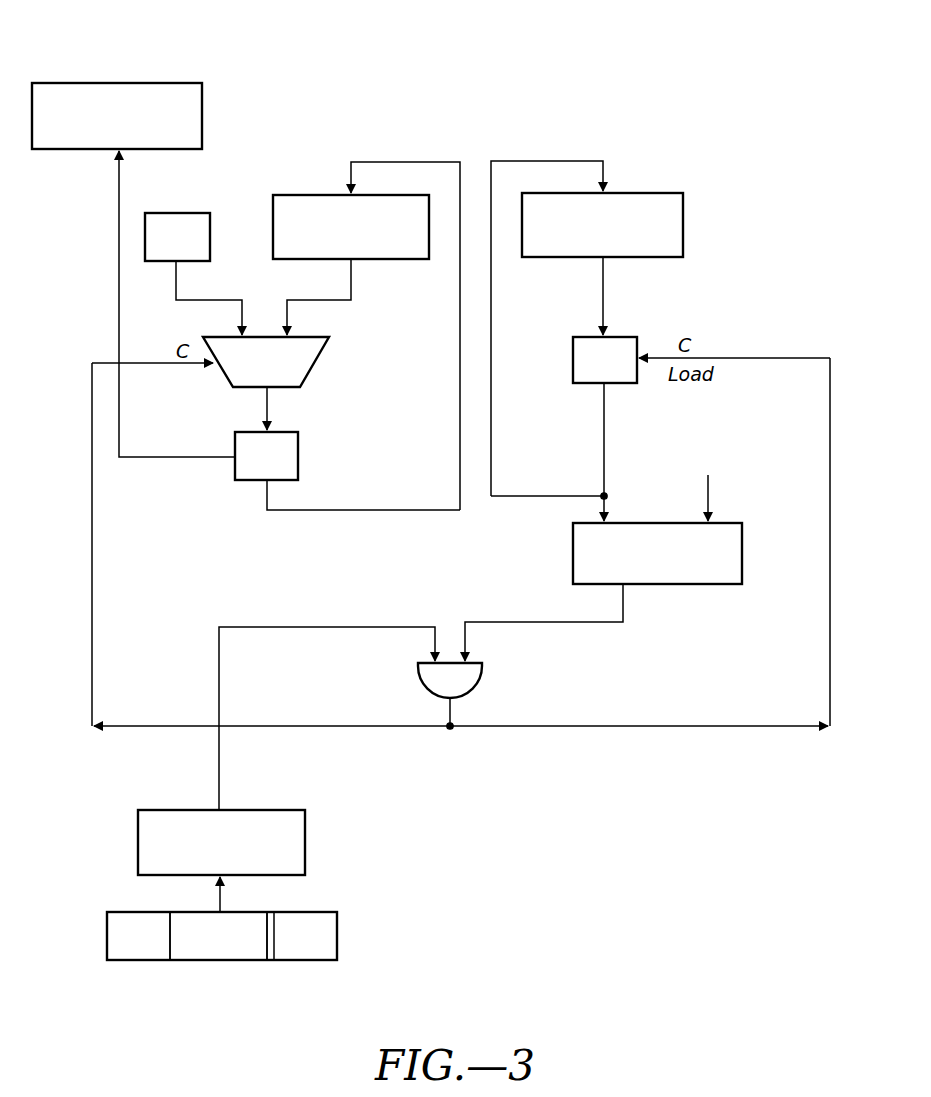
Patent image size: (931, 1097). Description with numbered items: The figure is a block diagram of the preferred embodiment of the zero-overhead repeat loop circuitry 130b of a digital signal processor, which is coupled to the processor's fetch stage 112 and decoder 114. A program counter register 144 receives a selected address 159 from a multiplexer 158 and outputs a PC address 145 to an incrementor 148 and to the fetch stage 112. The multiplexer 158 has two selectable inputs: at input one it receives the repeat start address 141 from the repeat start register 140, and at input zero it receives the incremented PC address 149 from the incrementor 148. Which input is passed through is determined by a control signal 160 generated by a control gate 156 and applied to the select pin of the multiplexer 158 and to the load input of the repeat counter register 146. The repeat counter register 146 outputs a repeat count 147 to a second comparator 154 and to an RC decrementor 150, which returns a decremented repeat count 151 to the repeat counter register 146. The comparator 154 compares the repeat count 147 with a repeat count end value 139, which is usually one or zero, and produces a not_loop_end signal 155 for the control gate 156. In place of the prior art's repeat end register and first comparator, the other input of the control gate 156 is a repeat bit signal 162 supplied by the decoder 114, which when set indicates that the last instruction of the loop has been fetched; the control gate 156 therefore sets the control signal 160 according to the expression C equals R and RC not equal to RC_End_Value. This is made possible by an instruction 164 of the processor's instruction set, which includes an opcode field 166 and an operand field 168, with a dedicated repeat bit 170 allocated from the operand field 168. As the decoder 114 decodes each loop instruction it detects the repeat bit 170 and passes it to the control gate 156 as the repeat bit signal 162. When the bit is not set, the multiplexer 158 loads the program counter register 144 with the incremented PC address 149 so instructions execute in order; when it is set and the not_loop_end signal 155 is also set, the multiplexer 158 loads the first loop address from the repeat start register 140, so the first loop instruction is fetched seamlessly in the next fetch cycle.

The fetch stage 112 is at (117, 116).
The decoder 114 is at (221, 842).
The repeat loop circuitry 130b is at (718, 70).
The repeat count end value 139 is at (710, 497).
The repeat start register 140 is at (165, 212).
The repeat start address 141 is at (178, 282).
The program counter register 144 is at (285, 432).
The PC address 145 is at (270, 503).
The repeat counter register 146 is at (622, 337).
The repeat count 147 is at (606, 410).
The incrementor 148 is at (320, 194).
The incremented PC address 149 is at (353, 282).
The RC decrementor 150 is at (645, 192).
The decremented repeat count 151 is at (605, 282).
The second comparator 154 is at (744, 546).
The not_loop_end signal 155 is at (590, 624).
The control gate 156 is at (480, 680).
The multiplexer 158 is at (312, 378).
The selected address 159 is at (266, 396).
The control signal 160 is at (294, 764).
The repeat bit signal 162 is at (397, 604).
The instruction 164 is at (260, 939).
The opcode field 166 is at (146, 936).
The operand field 168 is at (223, 962).
The repeat bit 170 is at (272, 911).